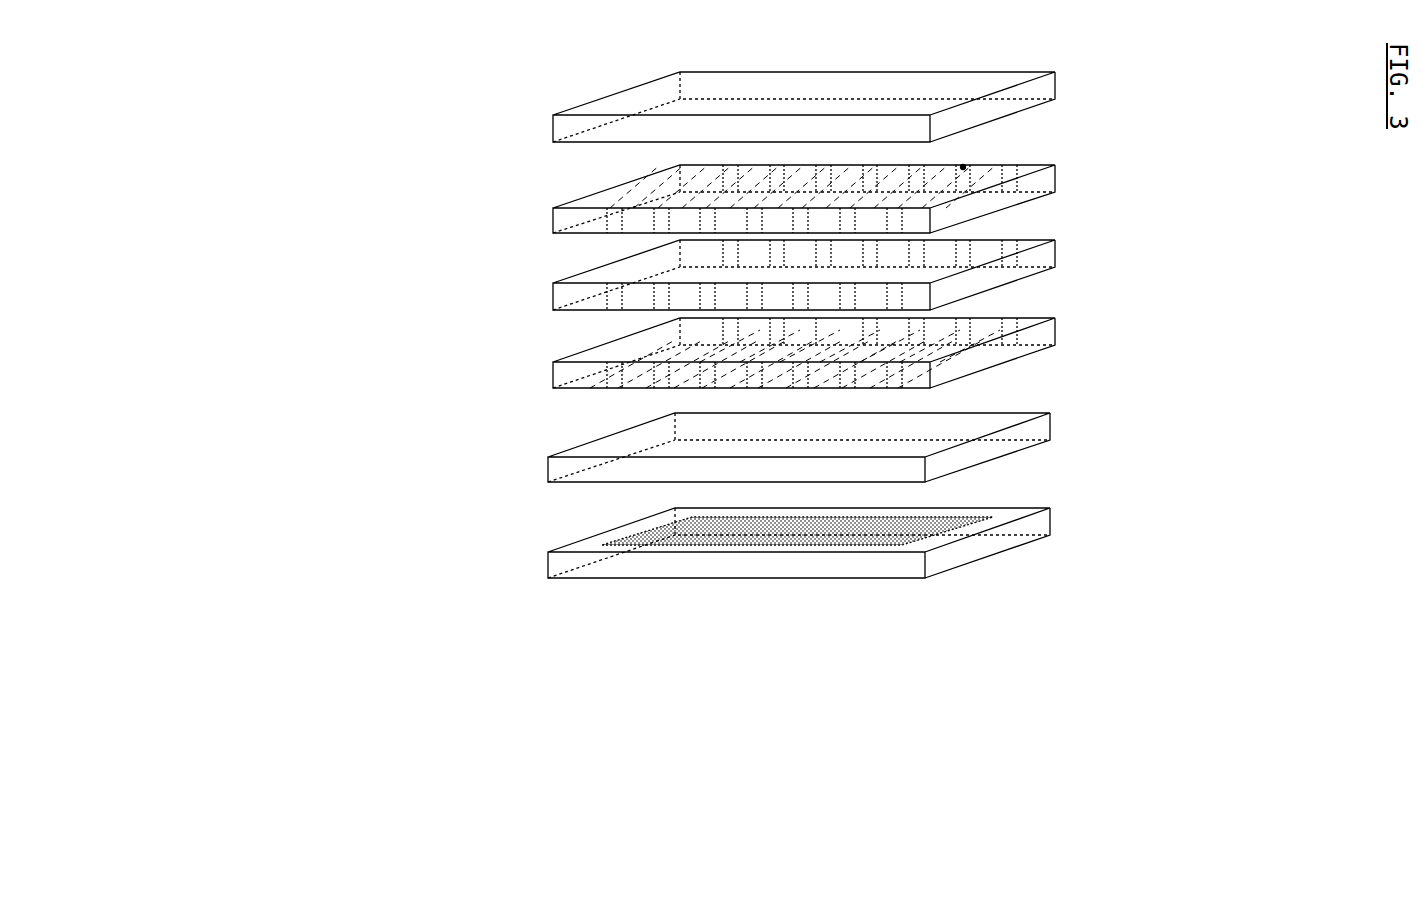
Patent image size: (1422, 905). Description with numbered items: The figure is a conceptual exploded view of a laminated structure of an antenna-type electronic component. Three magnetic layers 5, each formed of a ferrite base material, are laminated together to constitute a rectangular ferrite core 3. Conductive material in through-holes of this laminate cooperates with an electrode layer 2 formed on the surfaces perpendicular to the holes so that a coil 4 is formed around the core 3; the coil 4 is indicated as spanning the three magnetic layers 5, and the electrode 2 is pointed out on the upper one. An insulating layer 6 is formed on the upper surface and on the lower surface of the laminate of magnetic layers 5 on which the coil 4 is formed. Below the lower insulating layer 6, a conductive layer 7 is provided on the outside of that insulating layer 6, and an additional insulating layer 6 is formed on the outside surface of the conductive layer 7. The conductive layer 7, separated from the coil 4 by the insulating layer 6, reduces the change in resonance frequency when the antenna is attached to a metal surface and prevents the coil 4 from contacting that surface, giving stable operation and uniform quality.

The electrode layer 2 is at (963, 167).
The ferrite core 3 is at (593, 289).
The coil 4 is at (1067, 153).
The magnetic layer 5 is at (520, 377).
The insulating layer 6 is at (518, 565).
The conductive layer 7 is at (668, 529).